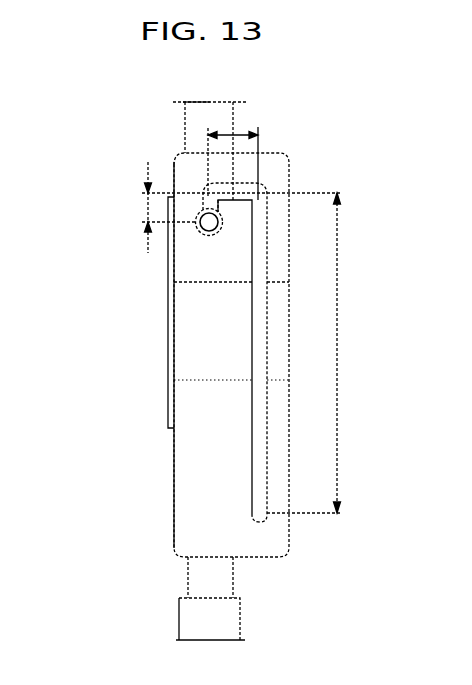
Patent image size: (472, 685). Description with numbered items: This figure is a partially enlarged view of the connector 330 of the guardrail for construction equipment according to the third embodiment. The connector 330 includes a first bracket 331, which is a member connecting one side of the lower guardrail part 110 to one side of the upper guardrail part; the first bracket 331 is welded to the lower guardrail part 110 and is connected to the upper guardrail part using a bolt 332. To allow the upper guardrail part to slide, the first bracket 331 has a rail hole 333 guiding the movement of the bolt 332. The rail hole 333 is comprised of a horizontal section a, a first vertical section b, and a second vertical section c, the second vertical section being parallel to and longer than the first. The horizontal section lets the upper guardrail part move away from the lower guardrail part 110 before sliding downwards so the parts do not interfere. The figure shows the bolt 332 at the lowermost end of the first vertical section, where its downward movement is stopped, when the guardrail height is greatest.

The connector 330 is at (85, 89).
The first bracket 331 is at (197, 451).
The bolt 332 is at (206, 237).
The rail hole 333 is at (257, 489).
The lower guardrail part 110 is at (195, 583).